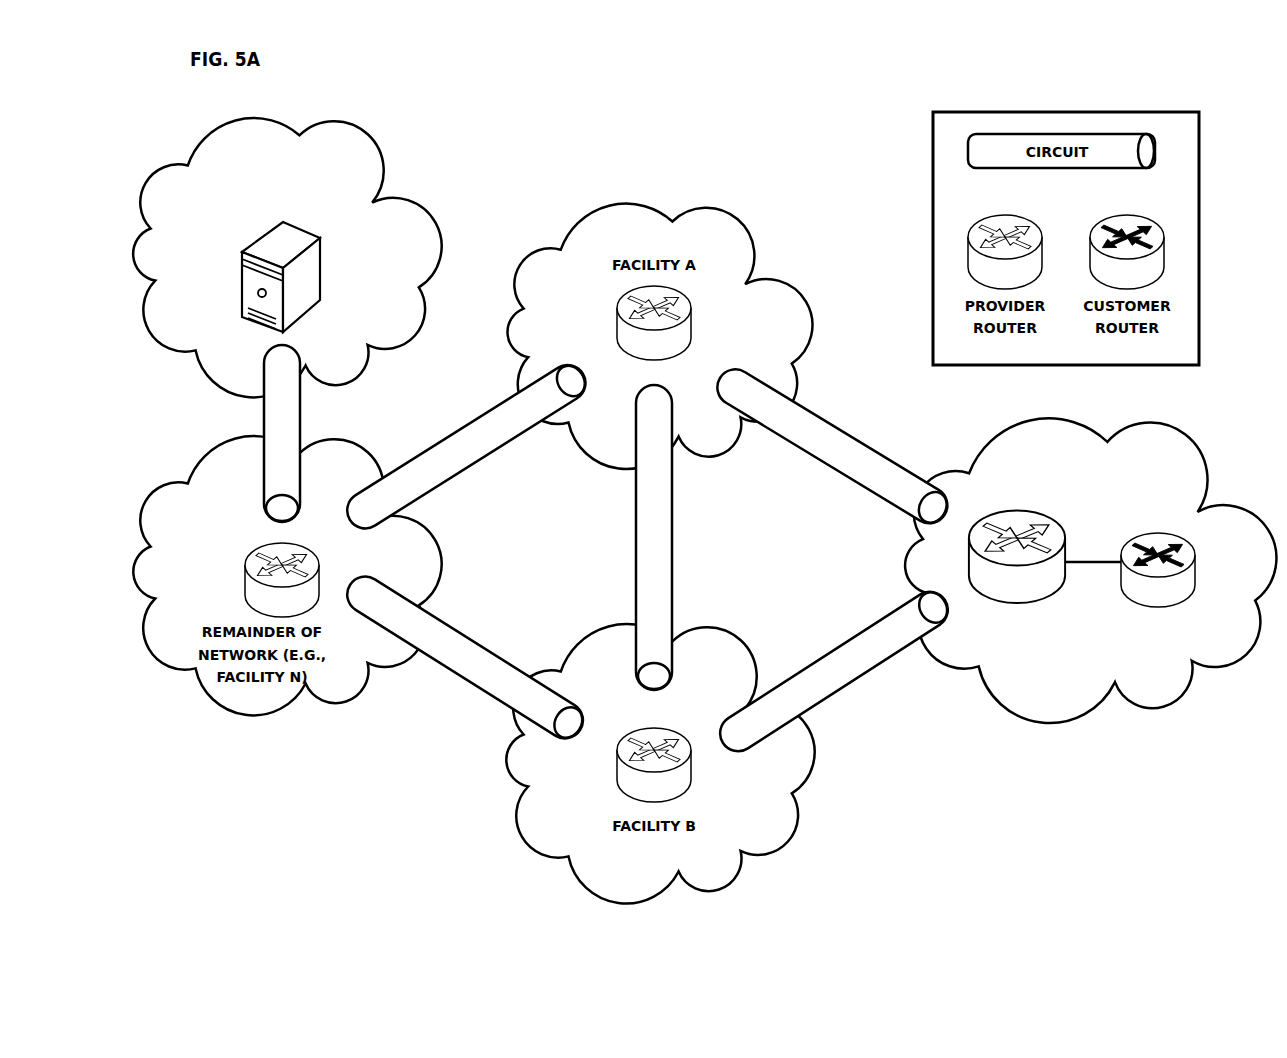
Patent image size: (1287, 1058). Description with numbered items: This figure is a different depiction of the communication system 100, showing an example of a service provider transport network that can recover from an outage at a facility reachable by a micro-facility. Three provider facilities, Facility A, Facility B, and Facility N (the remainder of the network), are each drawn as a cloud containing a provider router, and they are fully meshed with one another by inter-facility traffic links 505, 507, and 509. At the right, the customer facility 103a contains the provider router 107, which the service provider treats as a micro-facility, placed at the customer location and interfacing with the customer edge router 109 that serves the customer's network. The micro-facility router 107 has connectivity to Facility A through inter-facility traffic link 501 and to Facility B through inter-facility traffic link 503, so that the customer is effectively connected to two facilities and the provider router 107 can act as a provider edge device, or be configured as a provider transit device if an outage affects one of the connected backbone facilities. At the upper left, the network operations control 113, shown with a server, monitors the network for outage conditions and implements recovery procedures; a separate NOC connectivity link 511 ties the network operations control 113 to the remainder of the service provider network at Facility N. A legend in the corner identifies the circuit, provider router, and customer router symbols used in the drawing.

The system 100 is at (778, 163).
The network operations control 113 is at (282, 246).
The customer facility 103a is at (1090, 570).
The provider router 107 is at (1048, 580).
The customer edge router 109 is at (1195, 555).
The inter-facility traffic link 501 is at (834, 464).
The inter-facility traffic link 503 is at (872, 684).
The link 505 is at (673, 545).
The link 507 is at (486, 466).
The link 509 is at (461, 626).
The link 511 is at (318, 414).